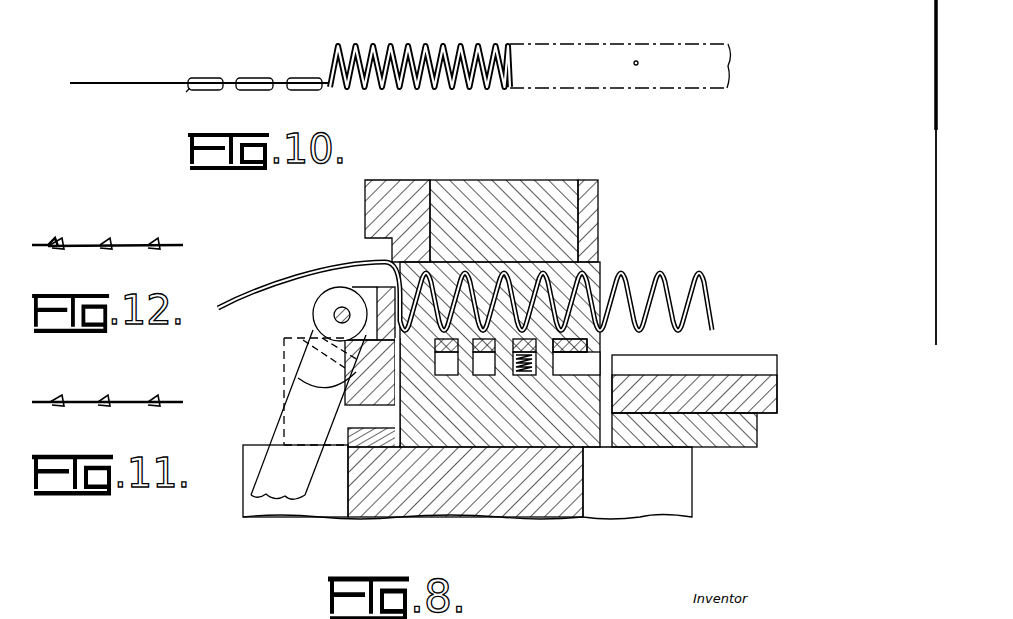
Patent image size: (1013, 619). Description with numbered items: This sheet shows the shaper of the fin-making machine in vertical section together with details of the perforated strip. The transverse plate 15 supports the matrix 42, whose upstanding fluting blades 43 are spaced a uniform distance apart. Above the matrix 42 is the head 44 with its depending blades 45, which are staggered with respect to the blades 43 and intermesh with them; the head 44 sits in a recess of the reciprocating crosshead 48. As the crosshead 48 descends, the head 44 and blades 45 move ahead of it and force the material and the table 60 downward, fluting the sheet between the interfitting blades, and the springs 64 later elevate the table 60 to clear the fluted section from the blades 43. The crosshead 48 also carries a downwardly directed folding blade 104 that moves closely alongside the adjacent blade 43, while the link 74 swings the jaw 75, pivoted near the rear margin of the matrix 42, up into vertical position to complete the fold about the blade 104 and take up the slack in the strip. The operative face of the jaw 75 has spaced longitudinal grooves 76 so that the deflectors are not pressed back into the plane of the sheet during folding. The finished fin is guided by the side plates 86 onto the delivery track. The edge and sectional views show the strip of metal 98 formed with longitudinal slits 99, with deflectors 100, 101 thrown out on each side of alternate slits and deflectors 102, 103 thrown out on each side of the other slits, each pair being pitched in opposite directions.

In FIG. 8, the transverse plate 15 is at (522, 507).
In FIG. 8, the matrix 42 is at (588, 440).
In FIG. 8, the fluting blades 43 is at (432, 340).
In FIG. 8, the head 44 is at (556, 215).
In FIG. 8, the depending blades 45 is at (596, 270).
In FIG. 8, the crosshead 48 is at (400, 180).
In FIG. 8, the table 60 is at (588, 345).
In FIG. 8, the springs 64 is at (514, 362).
In FIG. 8, the link 74 is at (270, 437).
In FIG. 8, the jaw 75 is at (370, 305).
In FIG. 8, the longitudinal grooves 76 is at (369, 392).
In FIG. 8, the side plates 86 is at (735, 362).
In FIG. 10, the strip of metal 98 is at (100, 80).
In FIG. 12, the strip of metal 98 is at (180, 240).
In FIG. 11, the strip of metal 98 is at (176, 397).
In FIG. 12, the longitudinal slits 99 is at (102, 250).
In FIG. 11, the longitudinal slits 99 is at (70, 408).
In FIG. 10, the deflector 100 is at (203, 76).
In FIG. 12, the deflector 100 is at (52, 240).
In FIG. 10, the deflector 101 is at (190, 92).
In FIG. 12, the deflector 101 is at (156, 250).
In FIG. 10, the deflector 102 is at (270, 76).
In FIG. 11, the deflector 102 is at (64, 392).
In FIG. 10, the deflector 103 is at (264, 92).
In FIG. 11, the deflector 103 is at (150, 408).
In FIG. 8, the folding blade 104 is at (388, 272).